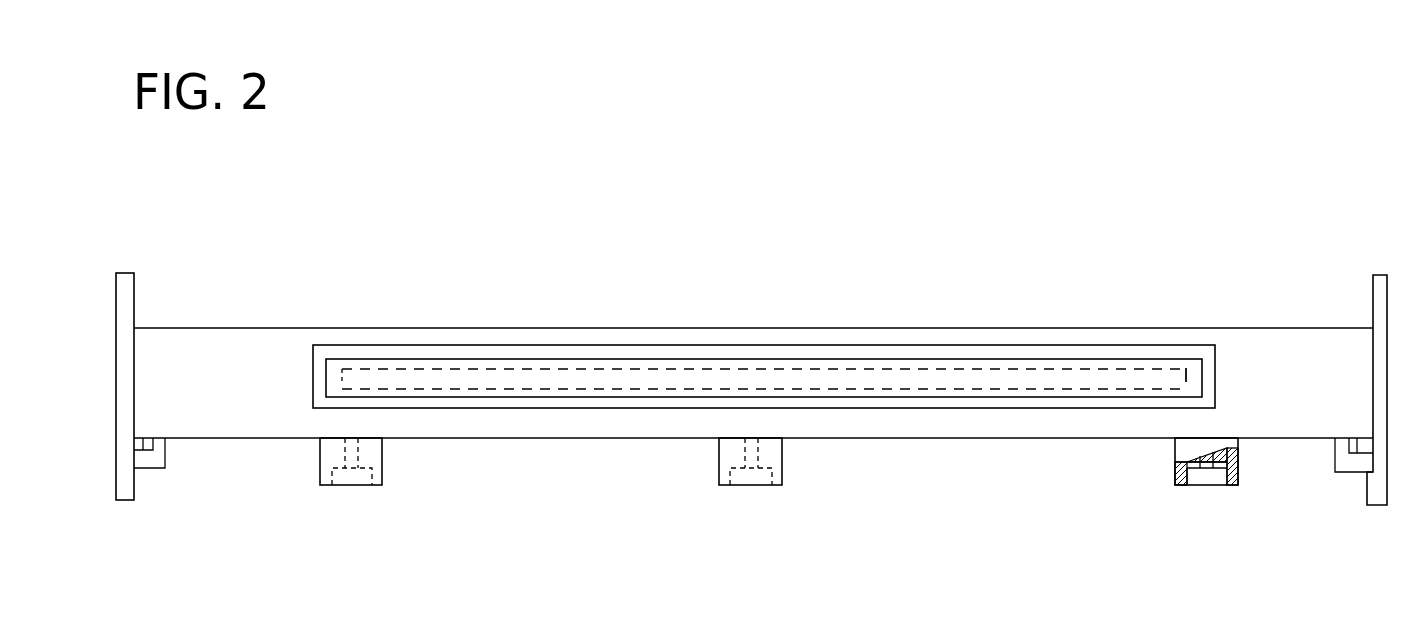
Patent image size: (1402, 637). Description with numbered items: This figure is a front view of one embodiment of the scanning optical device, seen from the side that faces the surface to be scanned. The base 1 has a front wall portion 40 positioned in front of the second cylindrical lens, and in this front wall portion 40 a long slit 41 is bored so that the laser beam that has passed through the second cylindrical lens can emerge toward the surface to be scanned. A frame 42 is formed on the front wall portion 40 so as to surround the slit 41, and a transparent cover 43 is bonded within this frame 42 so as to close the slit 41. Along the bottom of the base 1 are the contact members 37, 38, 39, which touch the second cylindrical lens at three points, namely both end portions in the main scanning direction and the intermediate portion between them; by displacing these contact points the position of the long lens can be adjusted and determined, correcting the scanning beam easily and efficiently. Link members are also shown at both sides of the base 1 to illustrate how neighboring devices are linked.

The base 1 is at (933, 440).
The contact member 37 is at (1206, 480).
The contact member 38 is at (748, 490).
The contact member 39 is at (345, 488).
The front wall portion 40 is at (257, 337).
The slit 41 is at (668, 384).
The frame 42 is at (728, 390).
The transparent cover 43 is at (790, 397).